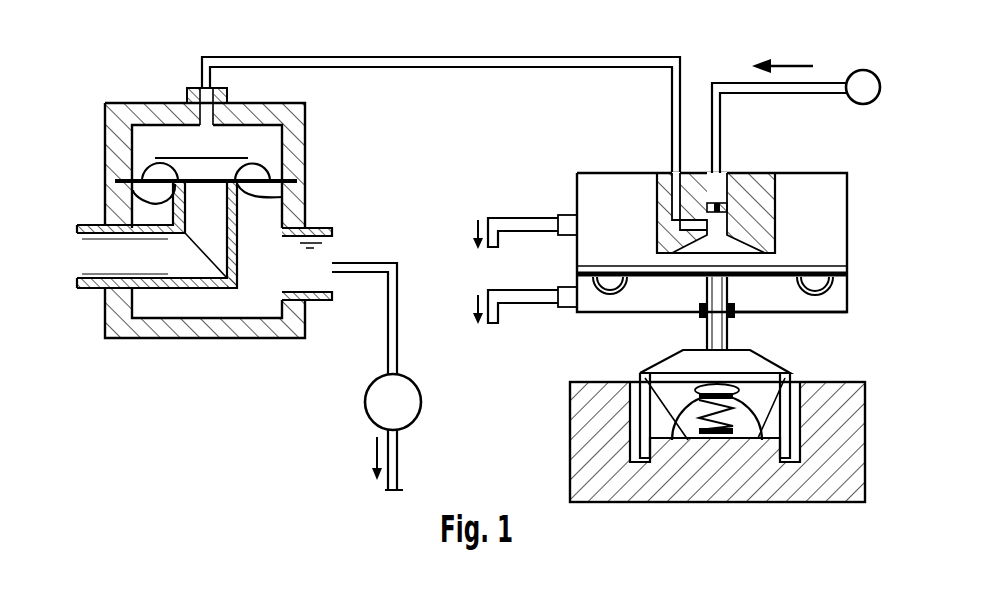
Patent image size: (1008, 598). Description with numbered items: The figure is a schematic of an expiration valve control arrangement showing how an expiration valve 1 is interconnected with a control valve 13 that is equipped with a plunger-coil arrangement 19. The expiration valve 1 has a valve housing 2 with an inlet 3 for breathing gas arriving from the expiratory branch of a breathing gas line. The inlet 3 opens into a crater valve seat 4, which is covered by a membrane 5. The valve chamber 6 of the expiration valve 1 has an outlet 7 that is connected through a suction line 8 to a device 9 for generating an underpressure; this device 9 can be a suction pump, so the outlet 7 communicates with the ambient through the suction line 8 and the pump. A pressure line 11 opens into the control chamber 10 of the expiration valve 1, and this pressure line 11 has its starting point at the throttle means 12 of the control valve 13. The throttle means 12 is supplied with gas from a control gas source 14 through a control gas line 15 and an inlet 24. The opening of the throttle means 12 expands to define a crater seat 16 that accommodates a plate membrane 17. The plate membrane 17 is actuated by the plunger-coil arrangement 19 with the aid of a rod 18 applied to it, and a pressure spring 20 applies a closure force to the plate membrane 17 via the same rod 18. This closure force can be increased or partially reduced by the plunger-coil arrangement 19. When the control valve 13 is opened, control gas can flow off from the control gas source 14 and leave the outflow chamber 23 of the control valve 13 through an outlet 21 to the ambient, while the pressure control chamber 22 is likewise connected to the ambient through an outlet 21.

The expiration valve 1 is at (180, 360).
The valve housing 2 is at (302, 121).
The inlet 3 is at (124, 262).
The crater valve seat 4 is at (262, 188).
The membrane 5 is at (134, 204).
The valve chamber 6 is at (270, 305).
The outlet 7 is at (318, 258).
The suction line 8 is at (390, 348).
The device for generating an underpressure 9 is at (372, 422).
The control chamber 10 is at (151, 132).
The pressure line 11 is at (415, 57).
The throttle means 12 is at (775, 212).
The control valve 13 is at (808, 520).
The control gas source 14 is at (876, 78).
The control gas line 15 is at (737, 82).
The crater seat 16 is at (758, 264).
The plate membrane 17 is at (825, 296).
The rod 18 is at (725, 320).
The plunger-coil arrangement 19 is at (650, 400).
The pressure spring 20 is at (760, 422).
The outlet 21 is at (567, 212).
The pressure control chamber 22 is at (678, 305).
The outflow chamber 23 is at (628, 225).
The inlet 24 is at (720, 187).